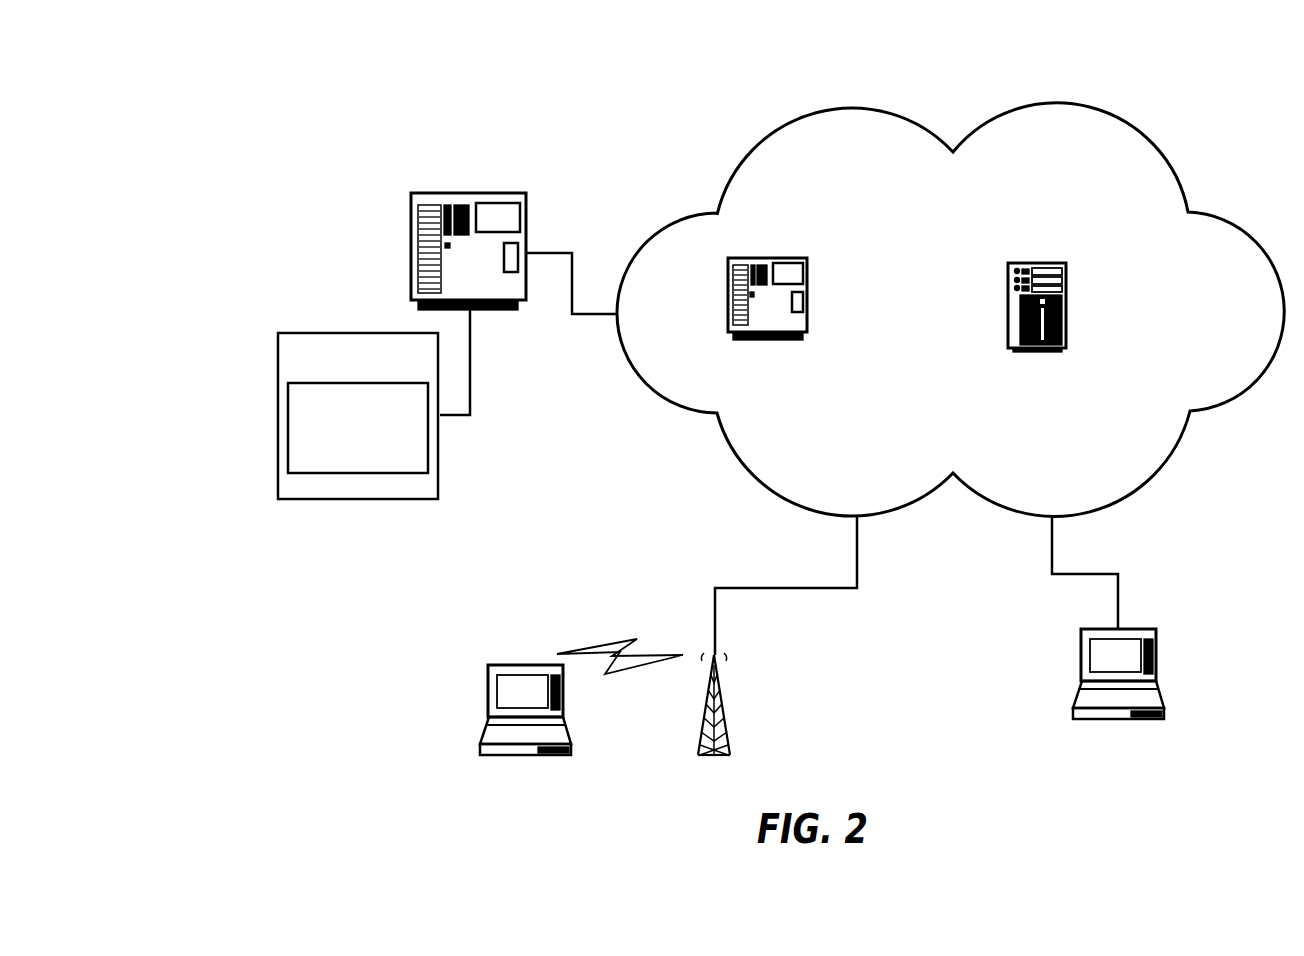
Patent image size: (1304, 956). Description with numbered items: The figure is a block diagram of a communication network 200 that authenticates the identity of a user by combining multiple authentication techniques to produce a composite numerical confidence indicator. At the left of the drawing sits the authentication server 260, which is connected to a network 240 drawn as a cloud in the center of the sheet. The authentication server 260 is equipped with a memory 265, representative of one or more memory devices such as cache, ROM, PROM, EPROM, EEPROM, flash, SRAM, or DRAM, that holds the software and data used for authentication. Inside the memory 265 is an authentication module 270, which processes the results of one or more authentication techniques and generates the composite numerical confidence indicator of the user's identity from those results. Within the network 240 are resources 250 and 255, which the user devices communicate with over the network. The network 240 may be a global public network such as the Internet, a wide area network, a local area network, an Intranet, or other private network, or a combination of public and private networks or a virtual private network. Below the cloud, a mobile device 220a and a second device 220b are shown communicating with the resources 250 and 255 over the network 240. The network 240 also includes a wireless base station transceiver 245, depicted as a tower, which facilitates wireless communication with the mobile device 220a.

The communication network 200 is at (276, 130).
The authentication server 260 is at (514, 273).
The memory 265 is at (358, 416).
The authentication module 270 is at (358, 428).
The network 240 is at (950, 379).
The resource 250 is at (730, 291).
The resource 255 is at (968, 286).
The mobile device 220a is at (474, 700).
The device 220b is at (1067, 664).
The wireless base station transceiver 245 is at (694, 697).